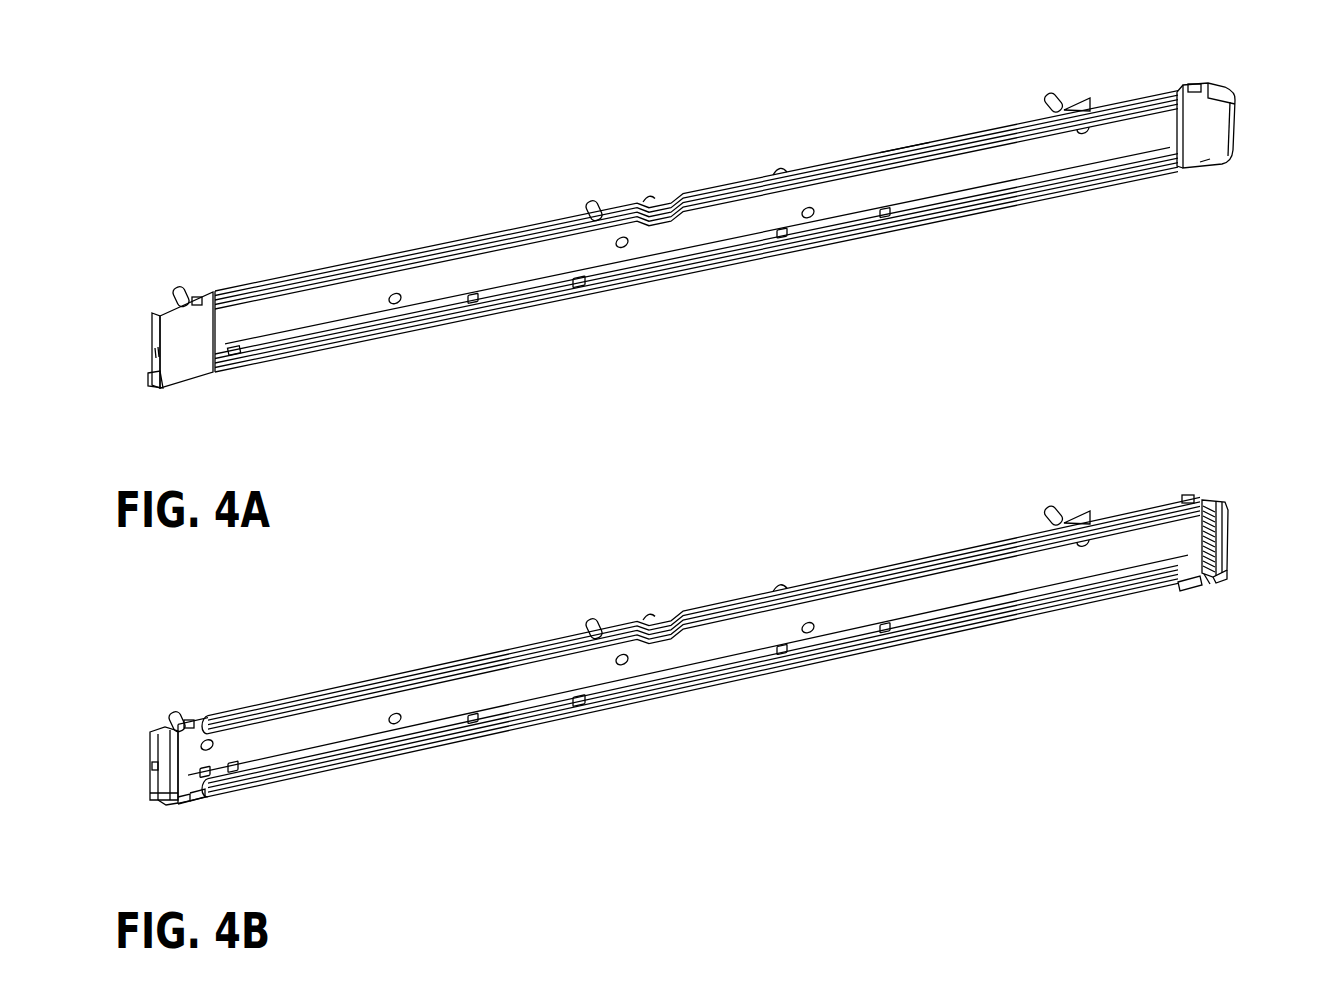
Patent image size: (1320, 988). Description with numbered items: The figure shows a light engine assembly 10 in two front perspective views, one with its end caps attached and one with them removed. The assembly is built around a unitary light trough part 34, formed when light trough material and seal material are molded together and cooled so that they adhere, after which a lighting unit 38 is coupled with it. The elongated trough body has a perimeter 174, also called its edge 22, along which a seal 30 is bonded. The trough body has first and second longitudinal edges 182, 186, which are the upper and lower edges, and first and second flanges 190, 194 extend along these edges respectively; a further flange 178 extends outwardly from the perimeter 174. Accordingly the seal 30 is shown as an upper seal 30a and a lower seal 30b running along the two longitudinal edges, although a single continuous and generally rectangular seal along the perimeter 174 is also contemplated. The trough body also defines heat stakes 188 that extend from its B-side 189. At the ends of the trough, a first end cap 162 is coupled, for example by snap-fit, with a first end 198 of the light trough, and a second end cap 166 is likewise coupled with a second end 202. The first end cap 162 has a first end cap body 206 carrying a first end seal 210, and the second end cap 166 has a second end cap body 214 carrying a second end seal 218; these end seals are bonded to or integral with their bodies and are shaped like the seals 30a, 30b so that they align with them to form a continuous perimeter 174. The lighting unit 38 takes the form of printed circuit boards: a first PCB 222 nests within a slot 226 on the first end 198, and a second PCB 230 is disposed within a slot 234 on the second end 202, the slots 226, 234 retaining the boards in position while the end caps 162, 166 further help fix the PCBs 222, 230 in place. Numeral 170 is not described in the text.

In FIG. 4B, the light engine assembly 10 is at (702, 621).
In FIG. 4B, the edge 22 is at (702, 634).
In FIG. 4A, the seal 30 is at (696, 238).
In FIG. 4B, the seal 30 is at (689, 647).
In FIG. 4A, the first seal 30a is at (696, 201).
In FIG. 4B, the first seal 30a is at (701, 617).
In FIG. 4A, the second seal 30b is at (696, 263).
In FIG. 4B, the second seal 30b is at (690, 681).
In FIG. 4B, the light trough part 34 is at (702, 634).
In FIG. 4B, the lighting unit 38 is at (1232, 541).
In FIG. 4A, the first end cap 162 is at (188, 311).
In FIG. 4A, the second end cap 166 is at (1194, 134).
In FIG. 4A, the rail body 170 is at (461, 331).
In FIG. 4B, the rail body 170 is at (683, 652).
In FIG. 4B, the perimeter 174 is at (1187, 503).
In FIG. 4B, the flange 178 is at (1186, 594).
In FIG. 4B, the first longitudinal edge 182 is at (207, 745).
In FIG. 4B, the second longitudinal edge 186 is at (192, 793).
In FIG. 4A, the heat stakes 188 is at (184, 288).
In FIG. 4B, the heat stakes 188 is at (1064, 512).
In FIG. 4A, the B-side 189 is at (902, 138).
In FIG. 4B, the first flange 190 is at (180, 712).
In FIG. 4B, the second flange 194 is at (185, 807).
In FIG. 4B, the first end 198 is at (157, 755).
In FIG. 4B, the second end 202 is at (1254, 560).
In FIG. 4A, the first end cap body 206 is at (198, 352).
In FIG. 4A, the first end seal 210 is at (235, 326).
In FIG. 4A, the second end cap body 214 is at (1200, 140).
In FIG. 4A, the second end seal 218 is at (1152, 98).
In FIG. 4B, the first PCB 222 is at (157, 772).
In FIG. 4B, the slot 226 is at (166, 808).
In FIG. 4B, the second PCB 230 is at (1234, 550).
In FIG. 4B, the slot 234 is at (1221, 588).